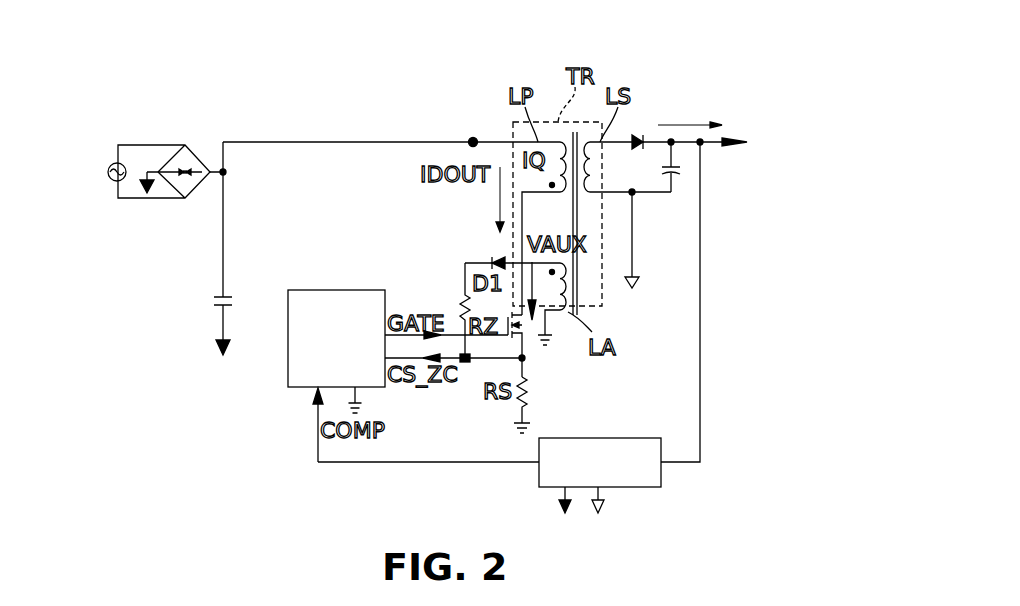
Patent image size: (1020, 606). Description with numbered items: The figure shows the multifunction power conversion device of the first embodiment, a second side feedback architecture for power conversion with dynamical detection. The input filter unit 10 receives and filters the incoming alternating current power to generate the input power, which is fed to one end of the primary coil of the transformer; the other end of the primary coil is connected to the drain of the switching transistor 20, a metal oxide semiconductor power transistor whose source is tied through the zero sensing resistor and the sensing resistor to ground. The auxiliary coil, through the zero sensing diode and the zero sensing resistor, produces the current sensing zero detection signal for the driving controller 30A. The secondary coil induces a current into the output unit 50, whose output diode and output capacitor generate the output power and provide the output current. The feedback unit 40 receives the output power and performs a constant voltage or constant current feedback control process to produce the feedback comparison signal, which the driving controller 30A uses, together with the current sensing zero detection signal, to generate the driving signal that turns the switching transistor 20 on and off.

The input filter unit 10 is at (172, 129).
The switching transistor 20 is at (523, 335).
The driving controller 30A is at (303, 390).
The feedback unit 40 is at (632, 488).
The output unit 50 is at (687, 82).